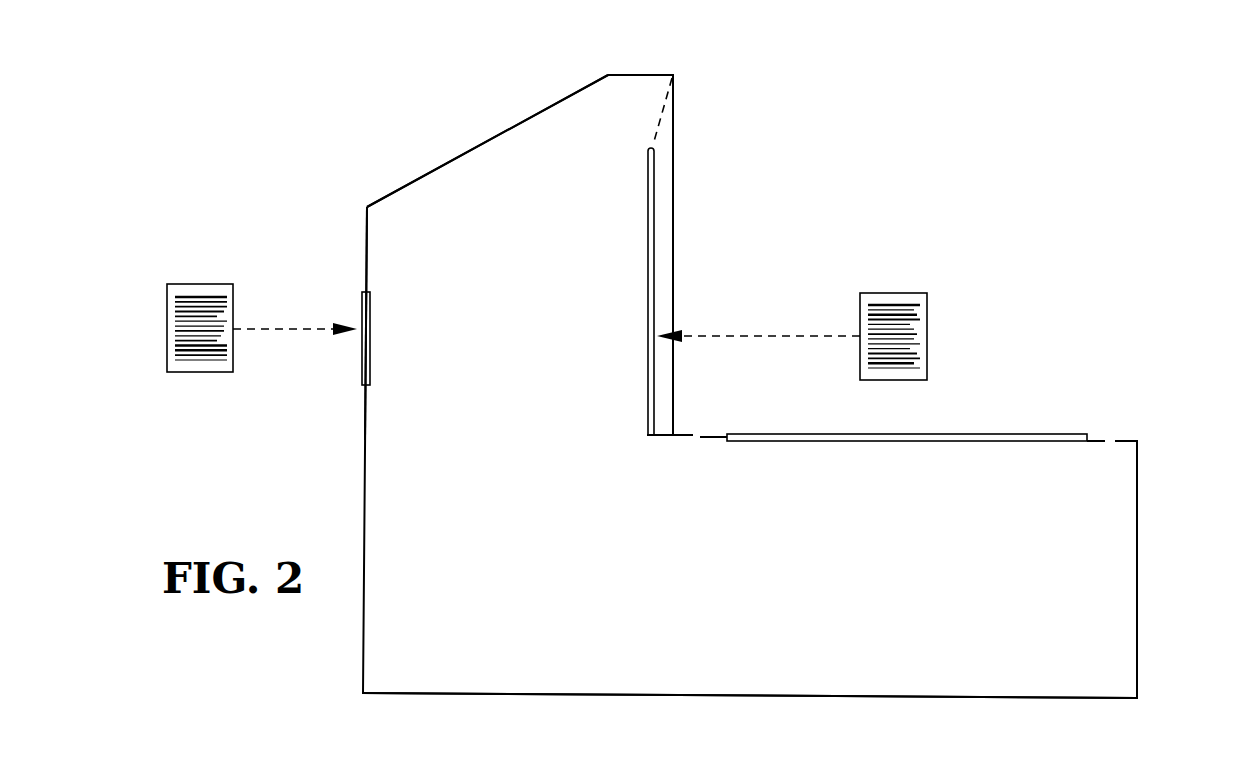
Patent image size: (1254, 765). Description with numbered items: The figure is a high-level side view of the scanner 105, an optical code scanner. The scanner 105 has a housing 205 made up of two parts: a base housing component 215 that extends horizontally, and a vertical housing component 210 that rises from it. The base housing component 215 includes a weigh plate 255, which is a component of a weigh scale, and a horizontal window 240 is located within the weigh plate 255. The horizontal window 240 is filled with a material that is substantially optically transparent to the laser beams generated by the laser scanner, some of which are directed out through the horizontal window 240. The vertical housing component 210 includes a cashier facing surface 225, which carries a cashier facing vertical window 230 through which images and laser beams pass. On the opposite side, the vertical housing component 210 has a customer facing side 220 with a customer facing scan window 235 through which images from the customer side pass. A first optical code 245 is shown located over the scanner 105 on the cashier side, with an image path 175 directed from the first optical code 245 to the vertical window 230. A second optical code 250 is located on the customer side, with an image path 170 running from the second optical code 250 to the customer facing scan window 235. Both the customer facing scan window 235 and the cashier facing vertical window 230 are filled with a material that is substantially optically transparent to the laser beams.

The scanner 105 is at (1128, 92).
The image path 170 is at (283, 329).
The image path 175 is at (753, 336).
The housing 205 is at (452, 695).
The vertical housing component 210 is at (512, 150).
The base housing component 215 is at (720, 632).
The customer facing side 220 is at (365, 235).
The cashier facing surface 225 is at (674, 116).
The cashier facing vertical window 230 is at (657, 175).
The customer facing scan window 235 is at (362, 368).
The horizontal window 240 is at (1000, 436).
The first optical code 245 is at (905, 293).
The second optical code 250 is at (167, 320).
The weigh plate 255 is at (1100, 440).